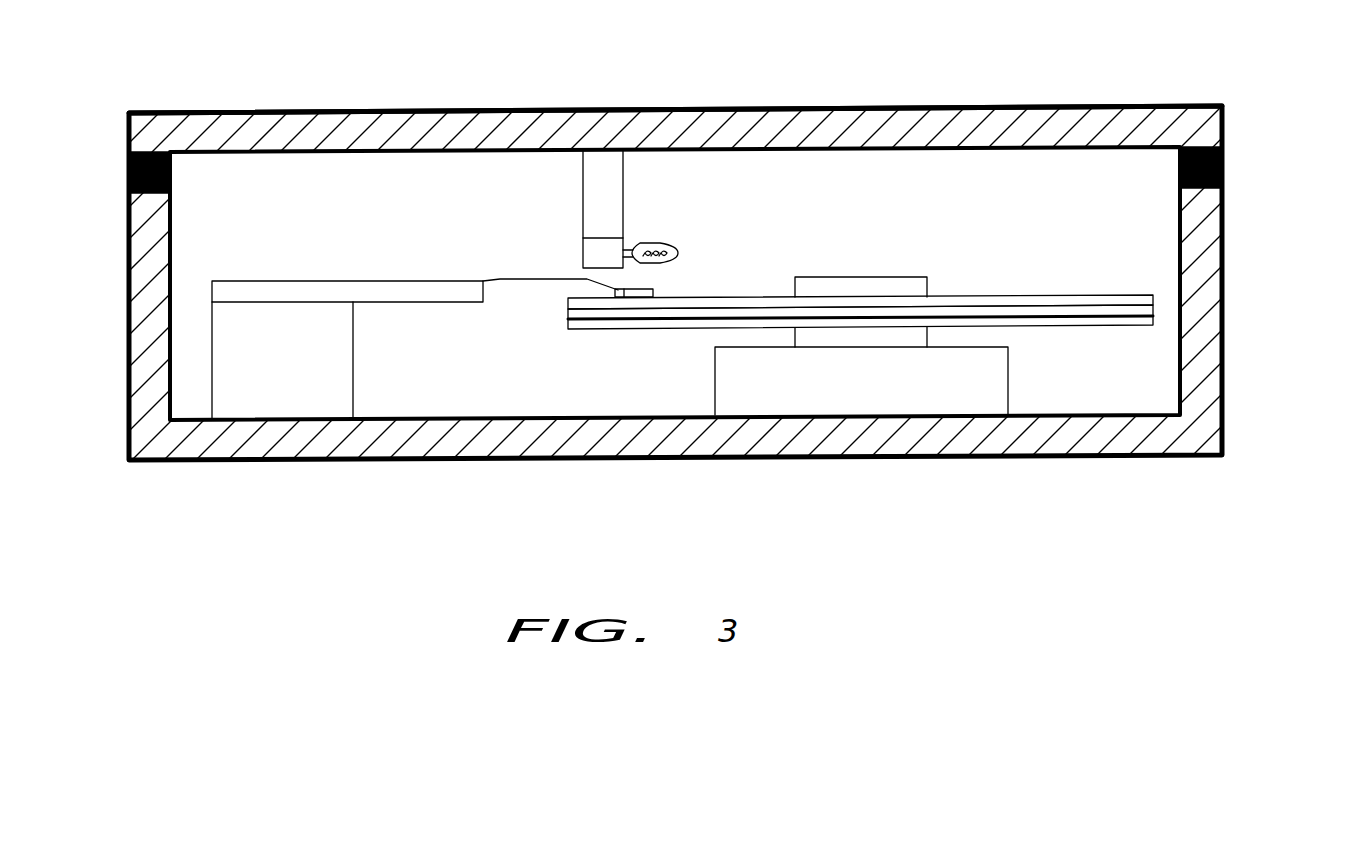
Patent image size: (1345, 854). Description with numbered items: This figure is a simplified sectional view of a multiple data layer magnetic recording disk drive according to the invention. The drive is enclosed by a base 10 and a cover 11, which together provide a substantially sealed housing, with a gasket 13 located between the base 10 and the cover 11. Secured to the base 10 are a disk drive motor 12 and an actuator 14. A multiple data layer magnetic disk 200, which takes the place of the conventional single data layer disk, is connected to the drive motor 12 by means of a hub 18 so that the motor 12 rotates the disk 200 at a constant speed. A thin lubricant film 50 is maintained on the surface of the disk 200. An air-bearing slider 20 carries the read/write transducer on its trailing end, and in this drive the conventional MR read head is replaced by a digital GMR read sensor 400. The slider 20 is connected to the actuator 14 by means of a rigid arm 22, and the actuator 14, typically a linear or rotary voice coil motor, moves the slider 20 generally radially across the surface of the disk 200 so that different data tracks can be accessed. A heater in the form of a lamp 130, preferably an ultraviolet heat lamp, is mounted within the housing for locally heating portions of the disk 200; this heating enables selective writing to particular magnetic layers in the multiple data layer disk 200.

The base 10 is at (1212, 434).
The cover 11 is at (350, 128).
The disk drive motor 12 is at (980, 392).
The gasket 13 is at (1222, 169).
The actuator 14 is at (317, 397).
The hub 18 is at (872, 280).
The air-bearing slider 20 is at (637, 297).
The rigid arm 22 is at (442, 290).
The lubricant film 50 is at (1127, 297).
The lamp 130 is at (658, 243).
The multiple data layer magnetic disk 200 is at (1153, 311).
The digital GMR read sensor 400 is at (600, 289).